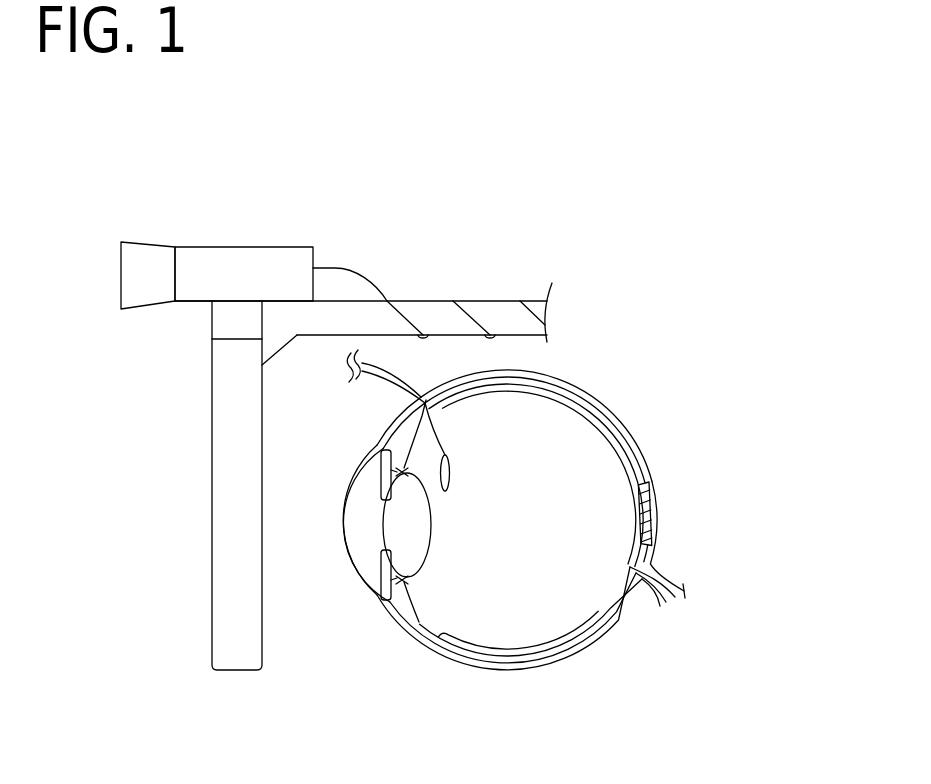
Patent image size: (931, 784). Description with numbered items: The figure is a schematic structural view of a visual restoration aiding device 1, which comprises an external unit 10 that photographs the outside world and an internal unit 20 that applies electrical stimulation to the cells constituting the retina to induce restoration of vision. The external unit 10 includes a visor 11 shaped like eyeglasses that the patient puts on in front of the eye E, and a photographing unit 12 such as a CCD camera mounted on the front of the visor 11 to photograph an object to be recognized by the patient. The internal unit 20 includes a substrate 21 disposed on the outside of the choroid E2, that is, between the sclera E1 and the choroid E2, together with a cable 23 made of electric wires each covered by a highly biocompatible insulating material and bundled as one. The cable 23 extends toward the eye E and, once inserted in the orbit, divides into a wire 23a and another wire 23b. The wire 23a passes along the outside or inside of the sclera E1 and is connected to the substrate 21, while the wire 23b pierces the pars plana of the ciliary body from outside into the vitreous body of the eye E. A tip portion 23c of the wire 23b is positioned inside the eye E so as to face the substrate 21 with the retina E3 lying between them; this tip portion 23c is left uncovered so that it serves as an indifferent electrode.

The visual restoration aiding device 1 is at (105, 192).
The external unit 10 is at (145, 555).
The visor 11 is at (413, 301).
The photographing unit 12 is at (277, 247).
The internal unit 20 is at (715, 507).
The substrate 21 is at (652, 490).
The cable 23 is at (392, 378).
The electric wire 23a is at (570, 378).
The electric wire 23b is at (450, 450).
The tip portion 23c is at (447, 488).
The eye E is at (455, 693).
The sclera E1 is at (613, 625).
The choroid E2 is at (560, 653).
The retina E3 is at (515, 650).